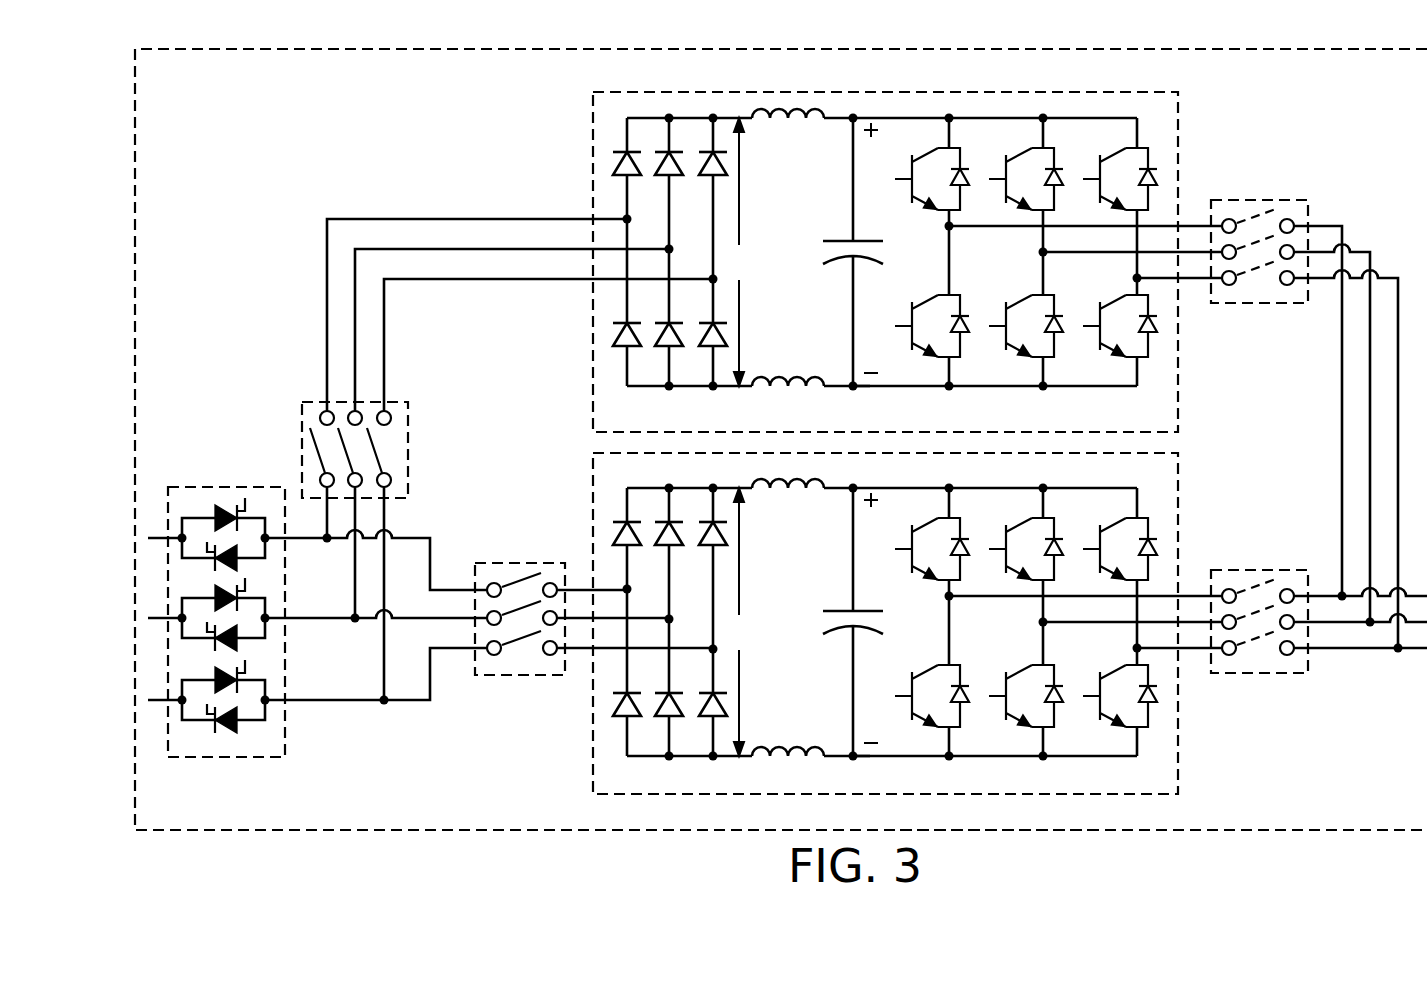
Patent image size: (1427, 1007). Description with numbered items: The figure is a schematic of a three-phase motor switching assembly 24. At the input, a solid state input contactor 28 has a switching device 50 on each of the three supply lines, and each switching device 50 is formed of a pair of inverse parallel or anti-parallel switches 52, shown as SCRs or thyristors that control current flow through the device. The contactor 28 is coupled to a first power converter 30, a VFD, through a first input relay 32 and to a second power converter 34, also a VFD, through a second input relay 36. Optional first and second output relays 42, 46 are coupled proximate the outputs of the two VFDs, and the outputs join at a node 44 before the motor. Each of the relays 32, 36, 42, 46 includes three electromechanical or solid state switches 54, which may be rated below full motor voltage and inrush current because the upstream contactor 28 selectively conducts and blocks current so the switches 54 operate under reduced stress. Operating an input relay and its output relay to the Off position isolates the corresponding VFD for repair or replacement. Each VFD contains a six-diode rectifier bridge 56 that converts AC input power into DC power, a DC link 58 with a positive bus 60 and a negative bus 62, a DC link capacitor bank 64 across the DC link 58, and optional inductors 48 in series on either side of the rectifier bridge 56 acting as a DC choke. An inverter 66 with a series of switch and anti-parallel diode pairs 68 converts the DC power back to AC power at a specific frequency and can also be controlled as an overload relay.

The motor switching assembly 24 is at (496, 49).
The solid state input contactor 28 is at (258, 487).
The first power converter 30 is at (990, 92).
The first input relay 32 is at (522, 563).
The second power converter 34 is at (975, 830).
The second input relay 36 is at (302, 452).
The first output relay 42 is at (1262, 570).
The node 44 is at (1398, 656).
The second output relay 46 is at (1262, 200).
The inductors 48 is at (812, 126).
The switching device 50 is at (195, 530).
The anti-parallel switches 52 is at (226, 508).
The switches 54 is at (388, 448).
The six-diode rectifier bridge 56 is at (668, 108).
The DC link 58 is at (738, 437).
The positive bus 60 is at (908, 122).
The negative bus 62 is at (910, 384).
The DC link capacitor bank 64 is at (838, 260).
The inverter 66 is at (1080, 108).
The switch and anti-parallel diode pairs 68 is at (927, 210).